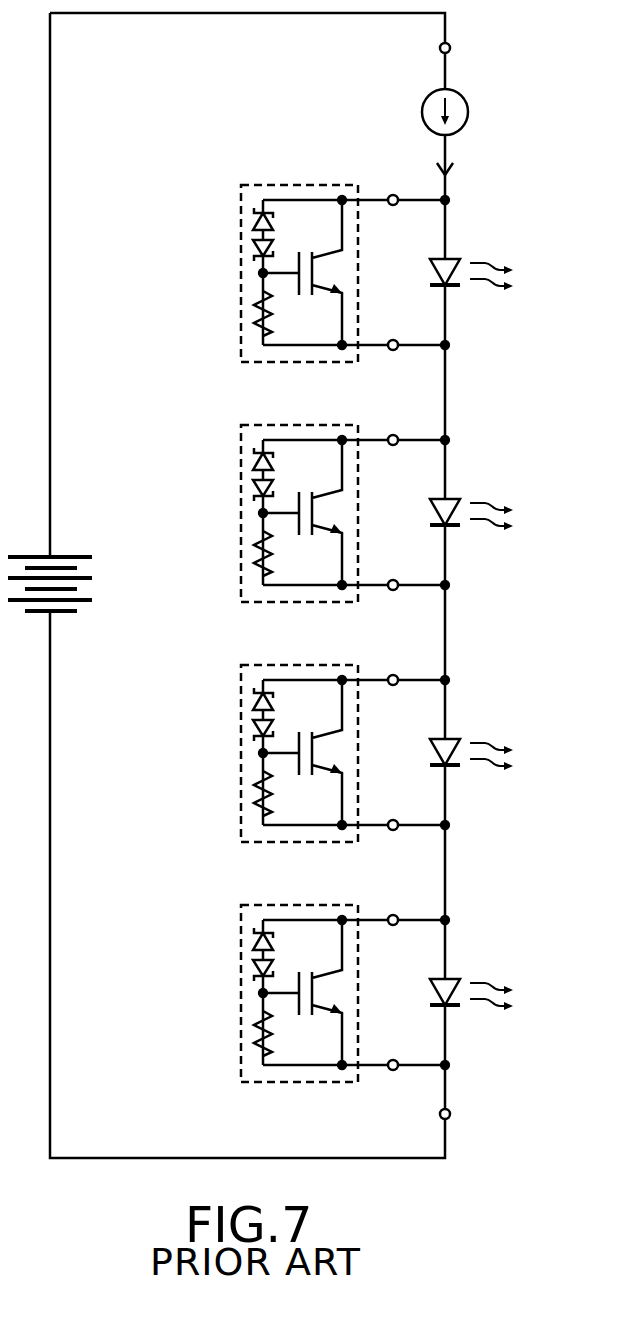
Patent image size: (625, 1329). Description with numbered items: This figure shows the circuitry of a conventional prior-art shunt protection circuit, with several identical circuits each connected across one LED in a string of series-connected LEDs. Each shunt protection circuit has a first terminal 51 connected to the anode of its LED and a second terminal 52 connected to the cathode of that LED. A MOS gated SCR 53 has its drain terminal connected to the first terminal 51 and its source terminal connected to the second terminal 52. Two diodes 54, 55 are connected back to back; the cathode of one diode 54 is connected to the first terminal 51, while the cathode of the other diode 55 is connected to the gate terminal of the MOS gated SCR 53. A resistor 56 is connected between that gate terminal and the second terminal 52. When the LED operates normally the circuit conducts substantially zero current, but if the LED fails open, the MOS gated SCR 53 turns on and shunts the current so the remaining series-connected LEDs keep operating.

The first terminal 51 is at (393, 195).
The second terminal 52 is at (393, 353).
The MOS gated SCR 53 is at (305, 237).
The diode 54 is at (240, 217).
The diode 55 is at (246, 247).
The resistor 56 is at (256, 314).